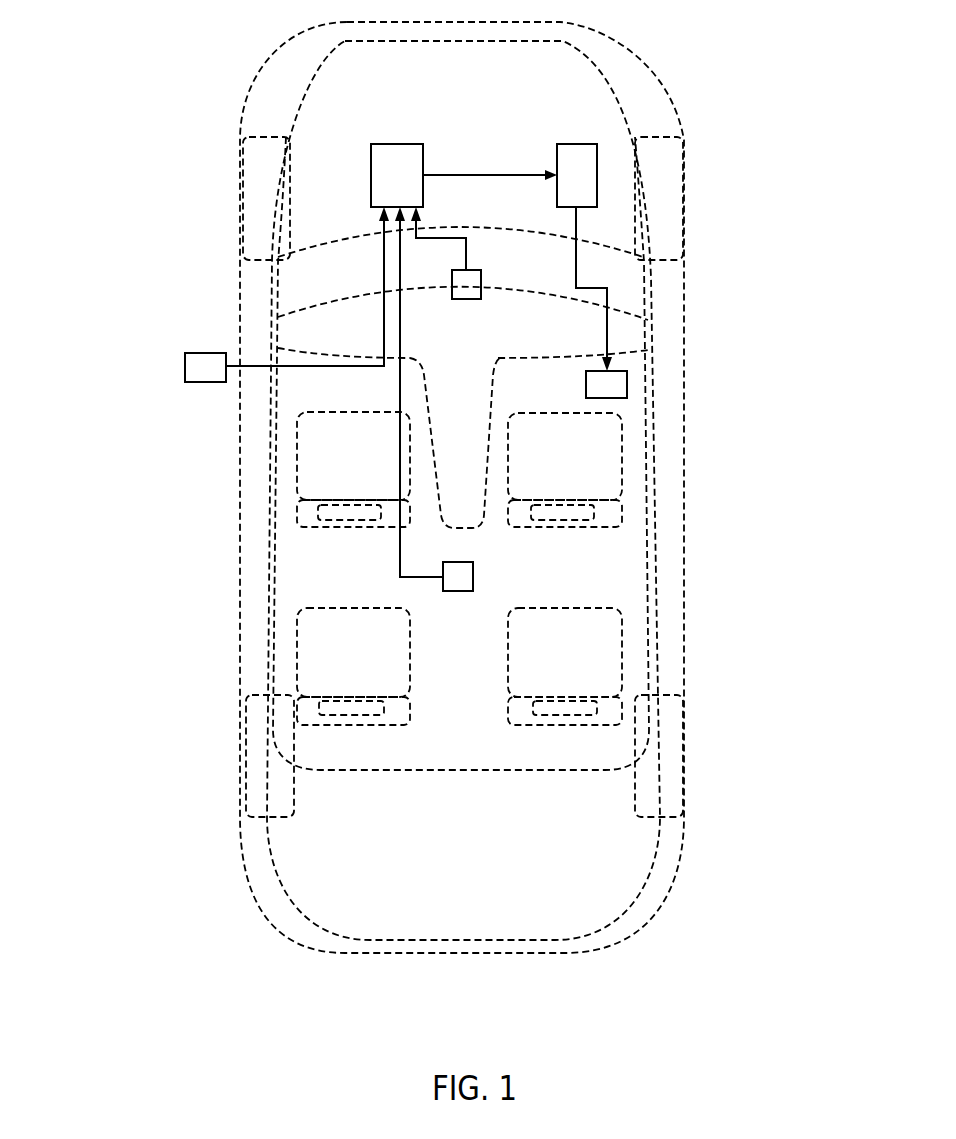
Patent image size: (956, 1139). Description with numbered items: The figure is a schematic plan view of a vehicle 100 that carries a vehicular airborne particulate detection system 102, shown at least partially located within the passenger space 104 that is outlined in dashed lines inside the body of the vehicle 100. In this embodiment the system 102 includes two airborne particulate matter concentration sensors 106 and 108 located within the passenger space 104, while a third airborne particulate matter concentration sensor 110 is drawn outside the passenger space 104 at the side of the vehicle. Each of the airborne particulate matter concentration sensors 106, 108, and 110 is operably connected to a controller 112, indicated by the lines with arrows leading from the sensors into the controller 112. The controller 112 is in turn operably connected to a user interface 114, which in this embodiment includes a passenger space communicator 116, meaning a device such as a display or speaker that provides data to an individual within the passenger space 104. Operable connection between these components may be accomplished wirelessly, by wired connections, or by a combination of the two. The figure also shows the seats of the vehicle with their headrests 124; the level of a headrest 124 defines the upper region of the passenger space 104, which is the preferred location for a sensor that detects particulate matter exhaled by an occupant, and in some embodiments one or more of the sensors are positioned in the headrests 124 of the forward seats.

The vehicle 100 is at (165, 133).
The vehicular airborne particulate detection system 102 is at (572, 92).
The passenger space 104 is at (652, 545).
The airborne particulate matter concentration sensor 106 is at (468, 299).
The airborne particulate matter concentration sensor 108 is at (473, 566).
The third airborne particulate matter concentration sensor 110 is at (185, 369).
The controller 112 is at (410, 144).
The user interface 114 is at (565, 144).
The passenger space communicator 116 is at (627, 378).
The headrest 124 is at (592, 508).